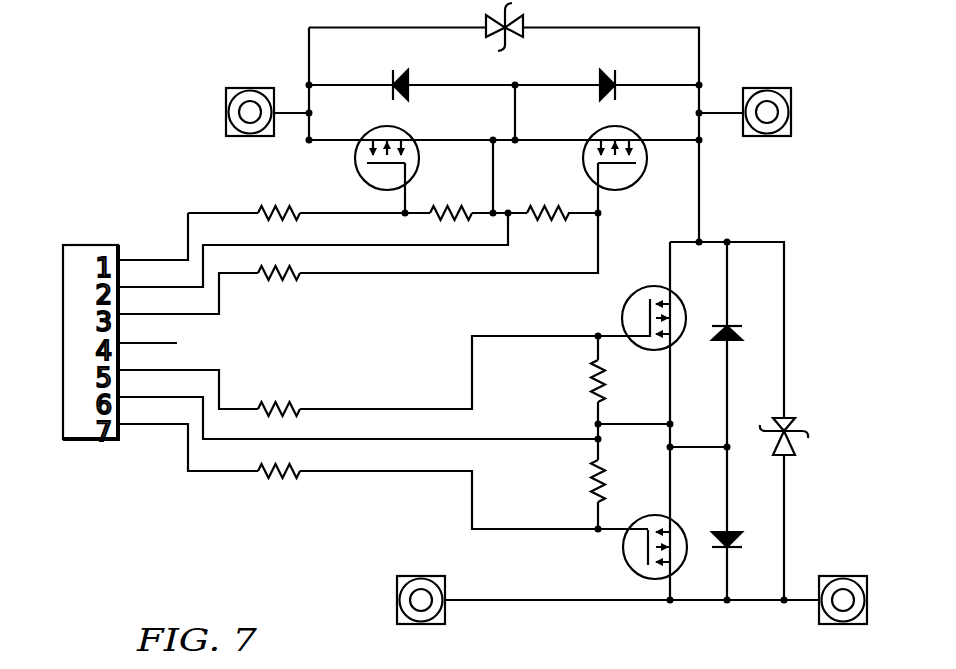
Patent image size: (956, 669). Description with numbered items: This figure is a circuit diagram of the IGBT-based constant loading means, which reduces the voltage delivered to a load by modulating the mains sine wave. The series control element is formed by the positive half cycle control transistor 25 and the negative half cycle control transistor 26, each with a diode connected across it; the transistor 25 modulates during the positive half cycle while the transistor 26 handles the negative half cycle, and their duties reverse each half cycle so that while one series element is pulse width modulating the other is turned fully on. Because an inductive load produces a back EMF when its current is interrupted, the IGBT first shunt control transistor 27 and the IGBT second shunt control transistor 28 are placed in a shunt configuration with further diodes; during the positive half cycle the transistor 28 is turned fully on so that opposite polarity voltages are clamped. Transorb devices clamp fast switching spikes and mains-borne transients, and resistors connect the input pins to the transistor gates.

The positive half cycle control transistor 25 is at (400, 126).
The negative half cycle control transistor 26 is at (605, 127).
The IGBT first shunt control transistor 27 is at (622, 314).
The IGBT second shunt control transistor 28 is at (623, 553).